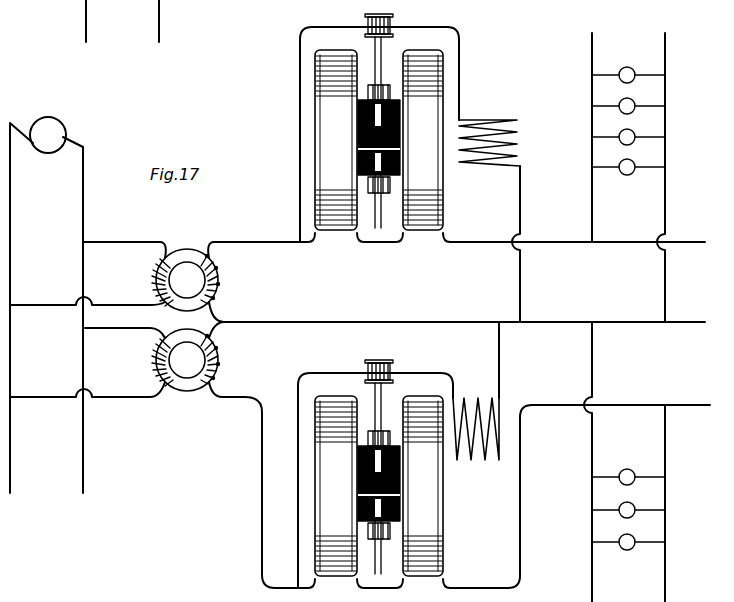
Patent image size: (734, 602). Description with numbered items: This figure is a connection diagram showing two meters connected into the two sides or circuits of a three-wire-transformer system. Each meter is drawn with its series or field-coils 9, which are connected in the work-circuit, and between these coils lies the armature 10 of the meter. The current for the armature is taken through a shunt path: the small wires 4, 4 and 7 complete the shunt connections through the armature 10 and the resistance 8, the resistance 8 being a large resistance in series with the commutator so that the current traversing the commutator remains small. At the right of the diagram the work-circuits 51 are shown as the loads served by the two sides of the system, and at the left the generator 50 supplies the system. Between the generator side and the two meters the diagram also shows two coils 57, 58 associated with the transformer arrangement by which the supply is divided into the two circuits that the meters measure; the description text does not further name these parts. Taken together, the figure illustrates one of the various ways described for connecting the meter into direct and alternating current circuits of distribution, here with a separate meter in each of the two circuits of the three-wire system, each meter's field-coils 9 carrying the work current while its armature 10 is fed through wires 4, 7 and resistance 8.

The small wire 4 is at (382, 301).
The small wire 7 is at (518, 282).
The resistance 8 is at (486, 281).
The series or field-coils 9 is at (379, 313).
The armature 10 is at (400, 132).
The generator 50 is at (46, 305).
The work-circuit 51 is at (624, 317).
The induction coil ring 57 is at (201, 320).
The coil winding 58 is at (171, 321).